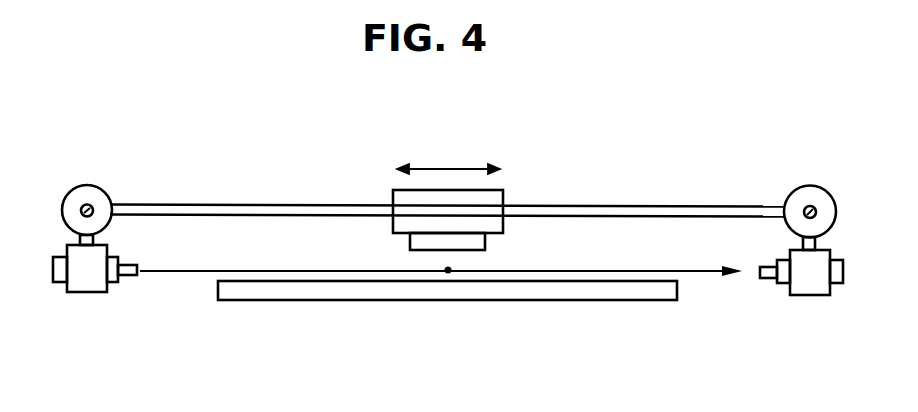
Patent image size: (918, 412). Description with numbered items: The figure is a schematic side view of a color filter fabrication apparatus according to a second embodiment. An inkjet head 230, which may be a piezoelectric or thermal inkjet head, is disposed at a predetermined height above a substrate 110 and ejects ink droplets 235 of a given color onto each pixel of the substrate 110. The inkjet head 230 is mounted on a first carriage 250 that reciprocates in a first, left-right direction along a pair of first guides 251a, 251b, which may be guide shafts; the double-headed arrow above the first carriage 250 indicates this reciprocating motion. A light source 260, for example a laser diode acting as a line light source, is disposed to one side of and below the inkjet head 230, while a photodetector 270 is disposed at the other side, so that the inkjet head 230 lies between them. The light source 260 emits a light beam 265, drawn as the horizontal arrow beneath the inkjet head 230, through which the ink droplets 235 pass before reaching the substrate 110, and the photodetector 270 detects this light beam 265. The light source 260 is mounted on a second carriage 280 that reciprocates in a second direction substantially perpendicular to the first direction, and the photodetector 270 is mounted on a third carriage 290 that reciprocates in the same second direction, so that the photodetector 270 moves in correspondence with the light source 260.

The substrate 110 is at (600, 301).
The inkjet head 230 is at (485, 248).
The ink droplets 235 is at (446, 268).
The first carriage 250 is at (498, 200).
The first guide 251a is at (455, 184).
The first guide 251b is at (657, 206).
The light source 260 is at (120, 280).
The light beam 265 is at (575, 270).
The photodetector 270 is at (777, 283).
The second carriage 280 is at (83, 292).
The third carriage 290 is at (812, 294).